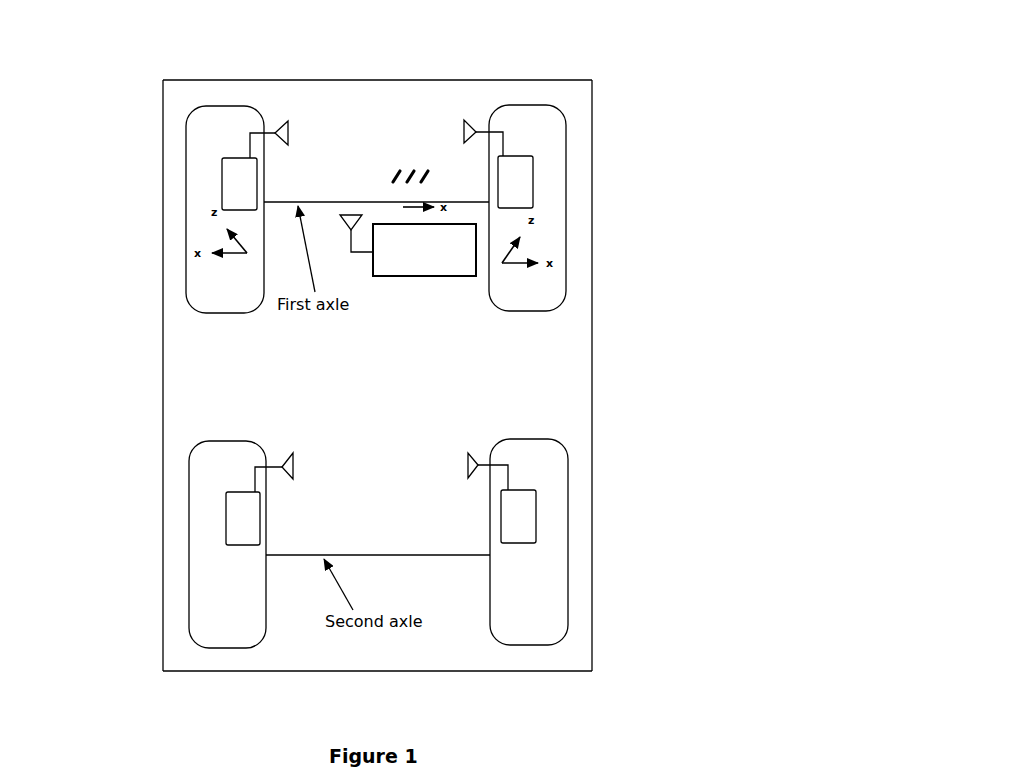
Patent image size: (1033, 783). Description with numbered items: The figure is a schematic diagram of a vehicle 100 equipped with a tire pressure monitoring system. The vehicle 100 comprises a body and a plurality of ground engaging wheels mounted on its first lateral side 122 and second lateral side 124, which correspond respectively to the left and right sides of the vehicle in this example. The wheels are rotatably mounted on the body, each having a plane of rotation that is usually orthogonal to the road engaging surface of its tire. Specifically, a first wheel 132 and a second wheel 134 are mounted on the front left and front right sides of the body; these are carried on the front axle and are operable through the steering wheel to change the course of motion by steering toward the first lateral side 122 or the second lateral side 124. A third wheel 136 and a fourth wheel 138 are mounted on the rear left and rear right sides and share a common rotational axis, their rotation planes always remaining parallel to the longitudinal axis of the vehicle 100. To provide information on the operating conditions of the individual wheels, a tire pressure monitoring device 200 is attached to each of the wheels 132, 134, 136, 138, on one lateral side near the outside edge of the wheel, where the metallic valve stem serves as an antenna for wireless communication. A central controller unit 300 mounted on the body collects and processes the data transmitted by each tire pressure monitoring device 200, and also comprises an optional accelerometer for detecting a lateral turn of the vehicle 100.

The vehicle 100 is at (703, 101).
The first lateral side 122 is at (131, 351).
The second lateral side 124 is at (613, 331).
The first wheel 132 is at (205, 146).
The second wheel 134 is at (562, 198).
The third wheel 136 is at (208, 557).
The fourth wheel 138 is at (550, 592).
The tire pressure monitoring device 200 is at (245, 167).
The central controller unit 300 is at (430, 267).